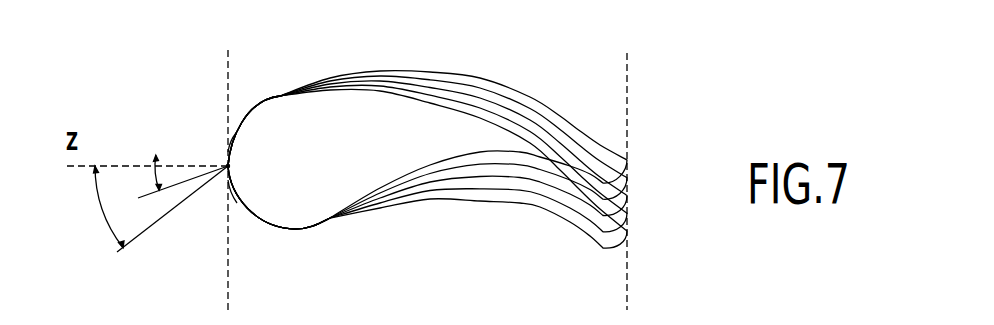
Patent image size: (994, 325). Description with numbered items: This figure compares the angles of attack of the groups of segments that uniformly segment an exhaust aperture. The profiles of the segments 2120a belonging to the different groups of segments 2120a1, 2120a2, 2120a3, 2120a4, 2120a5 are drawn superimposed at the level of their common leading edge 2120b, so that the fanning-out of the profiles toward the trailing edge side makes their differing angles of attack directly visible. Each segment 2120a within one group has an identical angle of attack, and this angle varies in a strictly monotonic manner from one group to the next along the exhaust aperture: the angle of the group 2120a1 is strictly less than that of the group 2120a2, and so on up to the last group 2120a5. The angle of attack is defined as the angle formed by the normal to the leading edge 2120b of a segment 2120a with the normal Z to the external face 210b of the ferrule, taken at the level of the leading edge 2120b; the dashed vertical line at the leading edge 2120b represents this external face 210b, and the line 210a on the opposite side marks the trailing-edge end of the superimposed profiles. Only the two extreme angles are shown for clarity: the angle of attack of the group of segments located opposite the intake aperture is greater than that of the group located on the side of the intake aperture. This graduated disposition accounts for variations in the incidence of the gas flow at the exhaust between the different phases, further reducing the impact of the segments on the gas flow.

The trailing edge reference line 210a is at (630, 79).
The external face of the ferrule 210b is at (231, 68).
The segment 2120a is at (486, 72).
The first group of segments 2120a1 is at (629, 229).
The second group of segments 2120a2 is at (628, 208).
The third group of segments 2120a3 is at (626, 195).
The fourth group of segments 2120a4 is at (628, 174).
The fifth group of segments 2120a5 is at (632, 155).
The leading edge 2120b is at (231, 166).